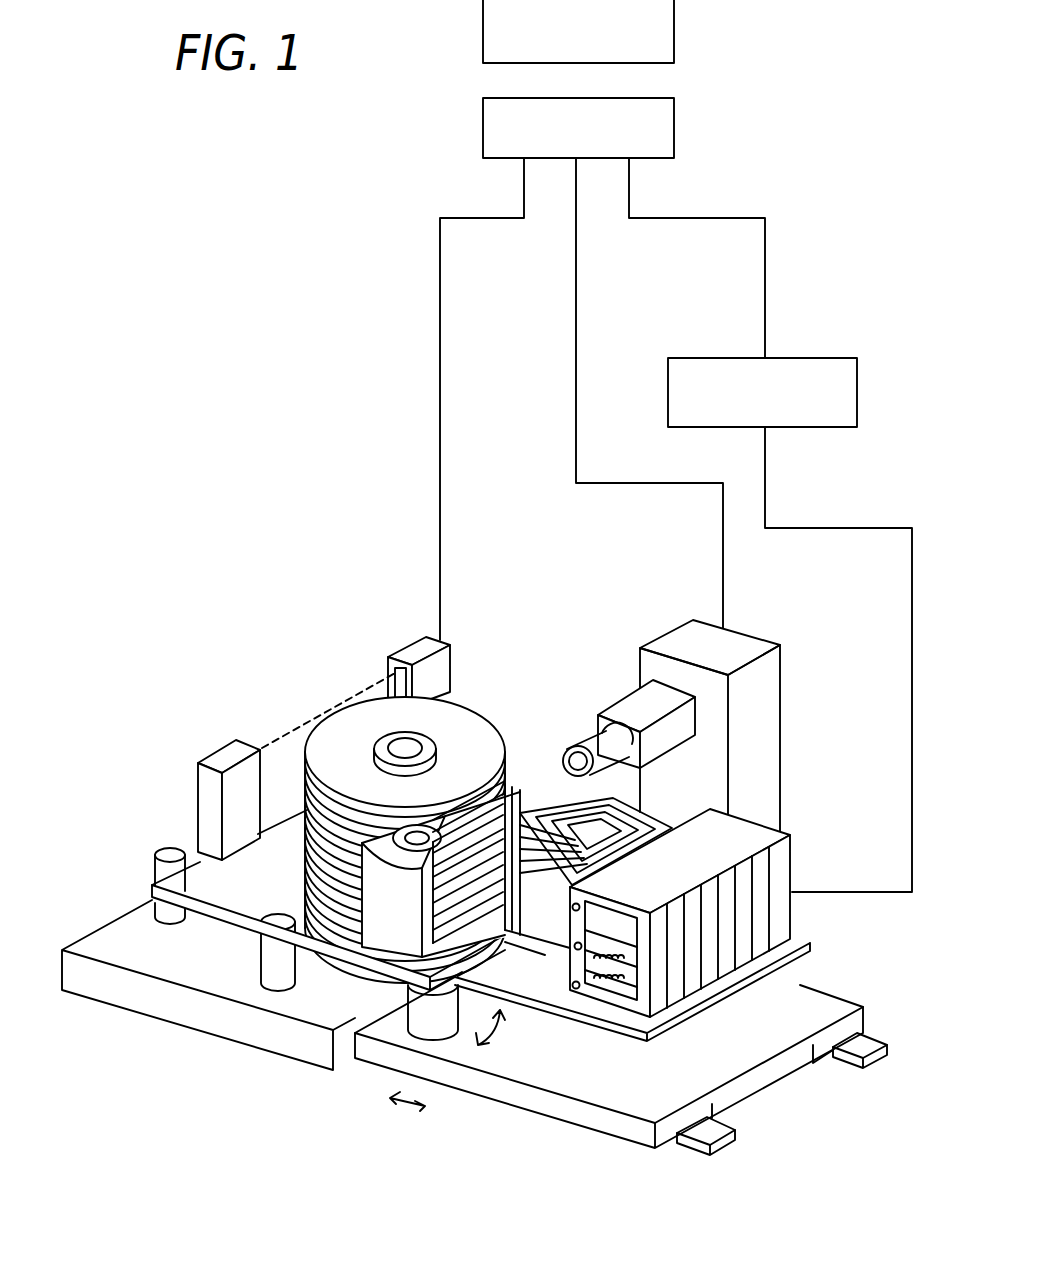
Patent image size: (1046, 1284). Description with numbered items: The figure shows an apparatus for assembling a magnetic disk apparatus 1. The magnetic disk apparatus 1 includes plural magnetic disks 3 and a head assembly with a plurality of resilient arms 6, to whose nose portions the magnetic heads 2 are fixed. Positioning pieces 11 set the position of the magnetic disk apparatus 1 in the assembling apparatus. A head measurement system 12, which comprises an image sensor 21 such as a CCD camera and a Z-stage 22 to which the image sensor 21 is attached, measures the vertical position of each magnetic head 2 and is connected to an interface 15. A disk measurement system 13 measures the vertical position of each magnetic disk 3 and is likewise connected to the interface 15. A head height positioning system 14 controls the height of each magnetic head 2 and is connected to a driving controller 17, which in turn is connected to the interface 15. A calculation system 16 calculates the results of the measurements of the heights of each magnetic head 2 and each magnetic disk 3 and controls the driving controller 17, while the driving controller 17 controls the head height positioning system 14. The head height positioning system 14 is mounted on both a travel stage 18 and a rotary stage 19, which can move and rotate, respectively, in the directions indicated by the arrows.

The magnetic disk apparatus 1 is at (468, 705).
The magnetic head 2 is at (517, 790).
The magnetic disk 3 is at (340, 718).
The resilient arms 6 is at (398, 908).
The positioning pieces 11 is at (165, 855).
The head measurement system 12 is at (671, 689).
The disk measurement system 13 is at (405, 648).
The head height positioning system 14 is at (792, 918).
The interface 15 is at (490, 124).
The calculation system 16 is at (483, 31).
The driving controller 17 is at (800, 368).
The travel stage 18 is at (617, 1128).
The rotary stage 19 is at (415, 1015).
The image sensor 21 is at (640, 697).
The Z-stage 22 is at (680, 636).